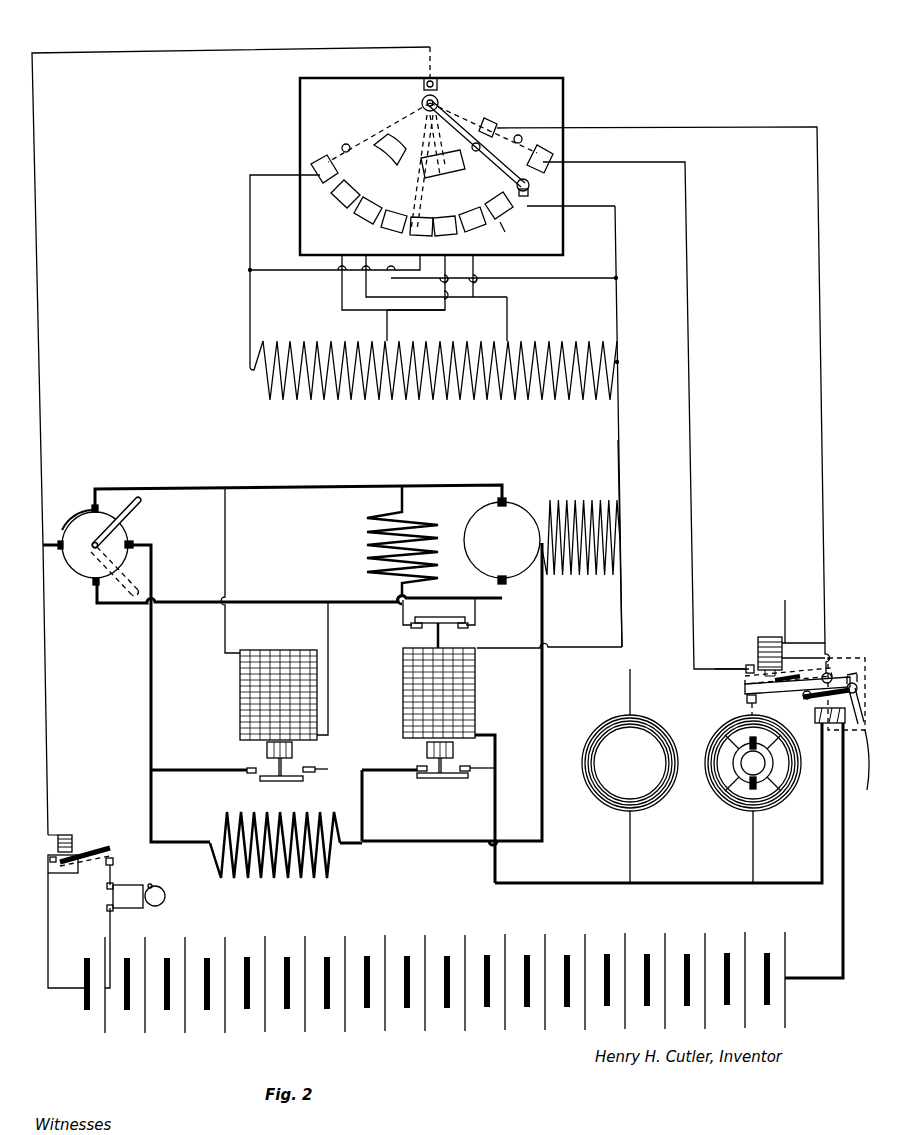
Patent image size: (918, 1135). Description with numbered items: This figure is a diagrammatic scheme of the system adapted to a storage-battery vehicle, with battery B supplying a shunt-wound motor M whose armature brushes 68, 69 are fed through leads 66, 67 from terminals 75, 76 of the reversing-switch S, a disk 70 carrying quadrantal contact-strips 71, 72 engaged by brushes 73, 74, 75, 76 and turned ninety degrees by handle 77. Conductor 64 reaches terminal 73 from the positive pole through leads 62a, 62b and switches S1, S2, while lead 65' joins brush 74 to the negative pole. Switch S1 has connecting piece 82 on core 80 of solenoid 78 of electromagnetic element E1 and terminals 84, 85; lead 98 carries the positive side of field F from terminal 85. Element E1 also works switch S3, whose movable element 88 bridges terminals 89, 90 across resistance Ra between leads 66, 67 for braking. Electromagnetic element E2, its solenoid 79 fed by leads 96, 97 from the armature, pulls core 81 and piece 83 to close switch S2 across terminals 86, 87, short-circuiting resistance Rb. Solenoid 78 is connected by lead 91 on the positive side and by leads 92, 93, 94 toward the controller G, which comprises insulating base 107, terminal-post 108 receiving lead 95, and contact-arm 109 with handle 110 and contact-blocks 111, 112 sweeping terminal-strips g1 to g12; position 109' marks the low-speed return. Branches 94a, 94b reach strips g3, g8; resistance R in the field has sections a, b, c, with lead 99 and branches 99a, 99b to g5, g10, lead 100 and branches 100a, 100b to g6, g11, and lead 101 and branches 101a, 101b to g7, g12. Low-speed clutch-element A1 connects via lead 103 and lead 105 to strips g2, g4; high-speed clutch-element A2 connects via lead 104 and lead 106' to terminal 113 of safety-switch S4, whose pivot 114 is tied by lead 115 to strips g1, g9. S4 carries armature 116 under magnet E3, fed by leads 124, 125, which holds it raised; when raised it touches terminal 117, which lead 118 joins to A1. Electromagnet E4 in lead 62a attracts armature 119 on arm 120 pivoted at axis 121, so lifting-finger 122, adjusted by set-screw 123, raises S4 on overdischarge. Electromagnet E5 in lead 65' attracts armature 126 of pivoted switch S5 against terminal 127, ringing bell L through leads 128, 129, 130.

The controller G is at (460, 54).
The insulating base 107 is at (431, 166).
The terminal-post 108 is at (440, 88).
The contact-arm 109 is at (473, 144).
The position of controller-handle 109' is at (414, 172).
The handle 110 is at (525, 232).
The contact-block 111 is at (472, 147).
The contact-block 112 is at (529, 182).
The terminal-strip g1 is at (495, 122).
The terminal-strip g2 is at (540, 147).
The terminal-strip g3 is at (505, 215).
The terminal-strip g4 is at (445, 178).
The terminal-strip g5 is at (478, 232).
The terminal-strip g6 is at (450, 238).
The terminal-strip g7 is at (418, 238).
The terminal-strip g8 is at (392, 233).
The terminal-strip g9 is at (385, 158).
The terminal-strip g10 is at (365, 222).
The terminal-strip g11 is at (340, 203).
The terminal-strip g12 is at (321, 157).
The lead 95 is at (200, 50).
The lead 115 is at (700, 127).
The lead 105 is at (640, 162).
The lead 94 is at (617, 318).
The lead 94a is at (598, 206).
The lead 94b is at (570, 278).
The lead 93 is at (618, 445).
The lead 101 is at (257, 305).
The branch lead 101a is at (265, 270).
The branch lead 101b is at (250, 215).
The lead 100 is at (387, 322).
The branch lead 100a is at (433, 318).
The branch lead 100b is at (342, 300).
The lead 99 is at (507, 312).
The branch lead 99a is at (473, 268).
The branch lead 99b is at (366, 292).
The resistance R is at (440, 385).
The resistance section a is at (560, 325).
The resistance section b is at (451, 325).
The resistance section c is at (318, 325).
The reversing-switch S is at (95, 545).
The disk 70 is at (122, 528).
The quadrantal contact-strip 71 is at (118, 582).
The quadrantal contact-strip 72 is at (66, 522).
The brush 73 is at (135, 544).
The brush 74 is at (50, 560).
The brush 75 is at (92, 583).
The brush 76 is at (92, 507).
The handle 77 is at (142, 503).
The lead 67 is at (272, 481).
The lead 66 is at (290, 601).
The lead 97 is at (225, 555).
The resistance Ra is at (381, 545).
The electric motor M is at (502, 540).
The brush 68 is at (508, 582).
The brush 69 is at (508, 498).
The shunt-field F is at (580, 522).
The lead 92 is at (620, 630).
The switch S3 is at (445, 618).
The movable element 88 is at (425, 617).
The terminal 89 is at (468, 628).
The terminal 90 is at (411, 628).
The electromagnetic element E2 is at (262, 709).
The solenoid magnet 79 is at (290, 660).
The core 81 is at (292, 750).
The connecting piece 83 is at (262, 779).
The terminal 86 is at (312, 767).
The terminal 87 is at (250, 768).
The switch S2 is at (323, 784).
The lead 96 is at (328, 672).
The conductor 64 is at (151, 685).
The electromagnetic element E1 is at (439, 729).
The solenoid magnet 78 is at (475, 680).
The core 80 is at (453, 750).
The connecting piece 82 is at (422, 778).
The terminal 84 is at (468, 772).
The terminal 85 is at (417, 766).
The switch S1 is at (447, 792).
The lead 91 is at (495, 742).
The lead 98 is at (542, 725).
The resistance Rb is at (275, 857).
The lead 65' is at (52, 766).
The electromagnet E5 is at (66, 826).
The pivoted switch S5 is at (92, 853).
The armature 126 is at (50, 860).
The terminal 127 is at (113, 860).
The lead 128 is at (66, 873).
The lead 129 is at (107, 885).
The bell L is at (139, 896).
The lead 130 is at (110, 928).
The battery B is at (436, 998).
The lead 62a is at (843, 905).
The lead 62b is at (575, 883).
The low-speed clutch-element A1 is at (630, 740).
The high-speed clutch-element A2 is at (753, 763).
The lead 103 is at (636, 840).
The lead 104 is at (760, 840).
The lead 106' is at (720, 716).
The terminal 113 is at (747, 699).
The safety-switch S4 is at (745, 686).
The terminal 117 is at (750, 665).
The lead 118 is at (720, 669).
The magnet E3 is at (760, 643).
The lead 125 is at (792, 613).
The lead 124 is at (796, 658).
The pivot 114 is at (826, 648).
The set-screw 123 is at (865, 665).
The armature 116 is at (796, 670).
The axis 121 is at (850, 675).
The lifting-finger 122 is at (805, 700).
The electromagnet E4 is at (830, 735).
The armature 119 is at (858, 724).
The arm 120 is at (872, 761).